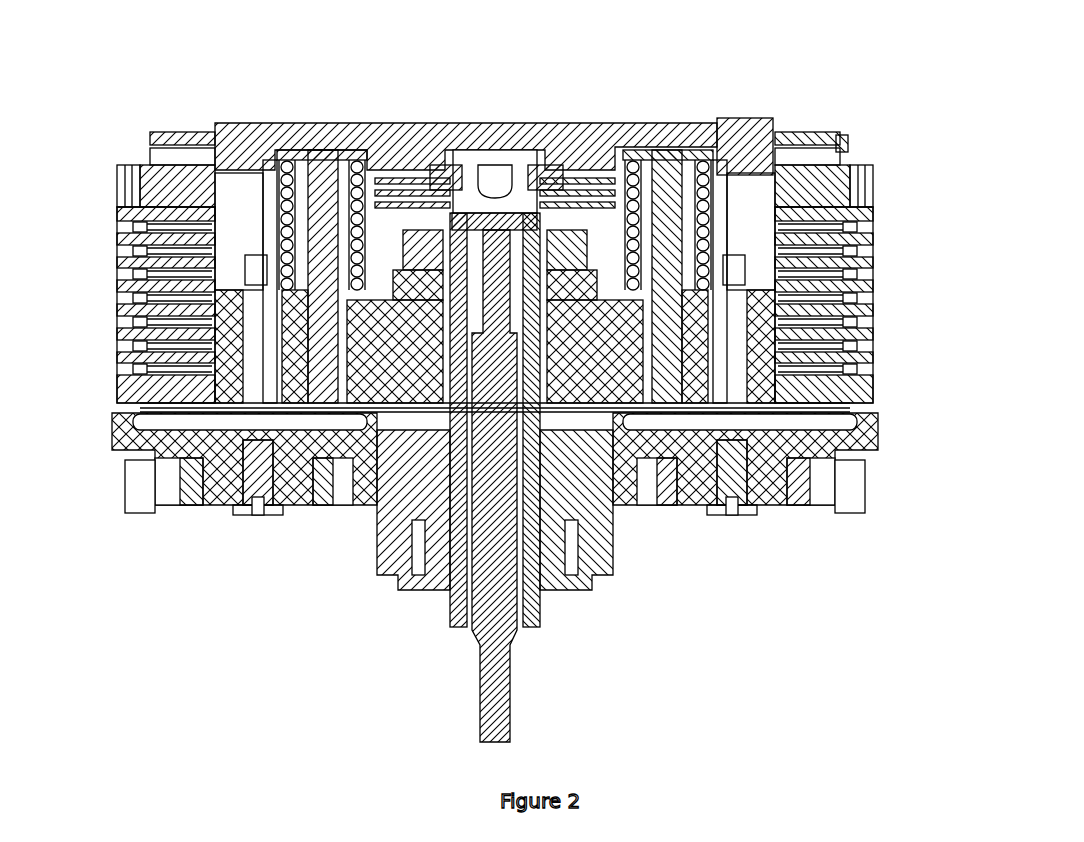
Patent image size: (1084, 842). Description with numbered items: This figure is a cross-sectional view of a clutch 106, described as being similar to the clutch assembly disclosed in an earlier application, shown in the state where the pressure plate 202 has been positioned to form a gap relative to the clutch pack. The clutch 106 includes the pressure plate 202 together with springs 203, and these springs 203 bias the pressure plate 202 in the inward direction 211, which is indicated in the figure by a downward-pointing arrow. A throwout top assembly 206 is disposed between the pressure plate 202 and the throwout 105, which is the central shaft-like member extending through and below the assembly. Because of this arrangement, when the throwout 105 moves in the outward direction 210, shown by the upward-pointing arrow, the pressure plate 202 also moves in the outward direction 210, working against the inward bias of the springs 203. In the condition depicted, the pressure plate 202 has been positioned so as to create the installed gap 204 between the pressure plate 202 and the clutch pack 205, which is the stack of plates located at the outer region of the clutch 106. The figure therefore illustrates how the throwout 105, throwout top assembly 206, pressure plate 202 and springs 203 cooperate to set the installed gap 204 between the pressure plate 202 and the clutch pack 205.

The throwout 105 is at (500, 603).
The clutch 106 is at (135, 97).
The pressure plate 202 is at (760, 142).
The springs 203 is at (707, 183).
The installed gap 204 is at (843, 146).
The clutch pack 205 is at (815, 386).
The throwout top assembly 206 is at (540, 177).
The outward direction 210 is at (973, 547).
The inward direction 211 is at (896, 726).